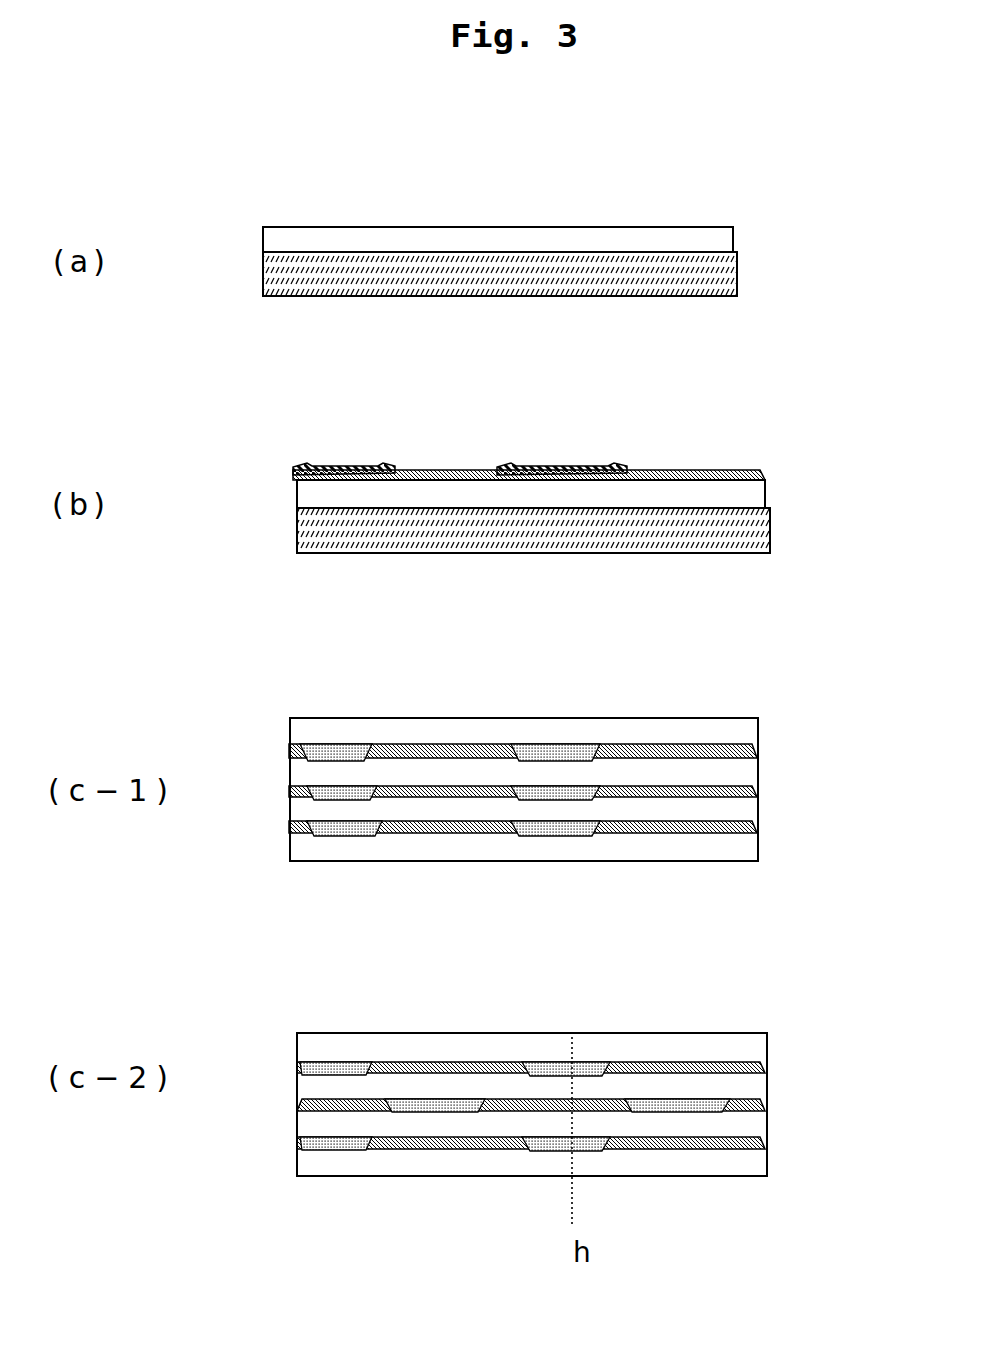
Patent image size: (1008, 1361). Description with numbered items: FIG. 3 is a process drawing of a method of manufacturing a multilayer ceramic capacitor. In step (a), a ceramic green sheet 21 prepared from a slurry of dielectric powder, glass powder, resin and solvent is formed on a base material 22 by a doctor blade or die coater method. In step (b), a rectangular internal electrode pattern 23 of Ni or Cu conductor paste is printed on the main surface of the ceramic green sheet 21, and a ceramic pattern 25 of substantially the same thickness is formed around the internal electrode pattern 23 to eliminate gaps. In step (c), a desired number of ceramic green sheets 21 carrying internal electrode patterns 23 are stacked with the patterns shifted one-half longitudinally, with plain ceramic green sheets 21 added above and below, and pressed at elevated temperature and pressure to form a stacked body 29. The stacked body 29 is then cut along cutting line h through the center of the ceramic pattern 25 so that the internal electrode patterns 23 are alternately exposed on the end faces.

The ceramic green sheet 21 is at (642, 238).
The base material 22 is at (650, 277).
The internal electrode pattern 23 is at (417, 477).
The ceramic pattern 25 is at (323, 468).
The stacked body 29 is at (712, 709).